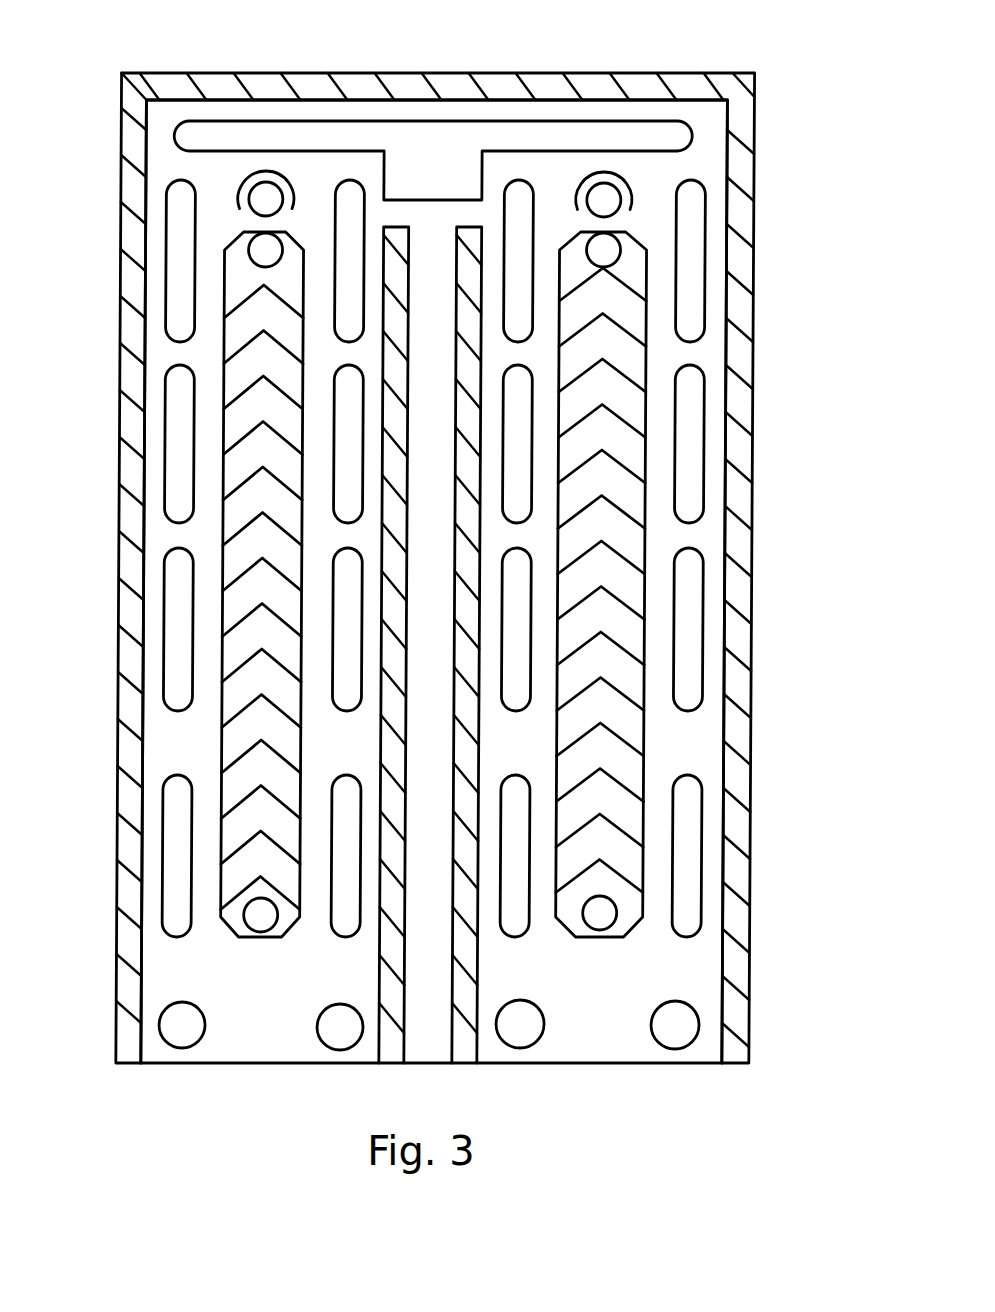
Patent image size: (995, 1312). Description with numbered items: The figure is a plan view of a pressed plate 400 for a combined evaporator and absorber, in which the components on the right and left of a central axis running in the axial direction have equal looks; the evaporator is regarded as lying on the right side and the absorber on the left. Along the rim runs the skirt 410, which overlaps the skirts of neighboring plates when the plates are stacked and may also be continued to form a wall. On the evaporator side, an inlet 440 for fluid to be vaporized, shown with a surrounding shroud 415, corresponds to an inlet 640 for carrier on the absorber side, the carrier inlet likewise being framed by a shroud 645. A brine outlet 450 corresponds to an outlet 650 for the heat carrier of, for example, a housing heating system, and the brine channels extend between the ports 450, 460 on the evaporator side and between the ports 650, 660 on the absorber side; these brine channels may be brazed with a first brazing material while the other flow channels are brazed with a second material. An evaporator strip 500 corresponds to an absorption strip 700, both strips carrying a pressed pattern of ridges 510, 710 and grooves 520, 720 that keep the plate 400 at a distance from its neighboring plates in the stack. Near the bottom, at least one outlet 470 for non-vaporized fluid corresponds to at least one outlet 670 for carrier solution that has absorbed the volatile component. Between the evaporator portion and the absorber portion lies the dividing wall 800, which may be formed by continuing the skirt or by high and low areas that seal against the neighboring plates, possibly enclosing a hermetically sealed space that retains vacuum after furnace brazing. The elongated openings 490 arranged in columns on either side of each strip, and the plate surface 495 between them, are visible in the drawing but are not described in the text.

The plate 400 is at (452, 588).
The skirt 410 is at (455, 72).
The inlet port ring 415 is at (615, 180).
The inlet for fluid to be vaporized 440 is at (633, 203).
The brine outlet 450 is at (630, 253).
The brine inlet/outlet 460 is at (620, 918).
The outlet for non-vaporized fluid 470 is at (675, 1050).
The channel openings 490 is at (257, 122).
The body plate 495 is at (673, 740).
The evaporator strip 500 is at (706, 584).
The ridges 510 is at (620, 420).
The grooves 520 is at (632, 457).
The inlet for carrier 640 is at (253, 212).
The outlet port ring 645 is at (247, 187).
The outlet for heat carrier 650 is at (252, 265).
The heat carrier inlet/outlet 660 is at (250, 918).
The outlet for carrier solution 670 is at (333, 1046).
The absorption strip 700 is at (170, 584).
The ridges 710 is at (233, 493).
The grooves 720 is at (242, 610).
The dividing wall 800 is at (427, 968).